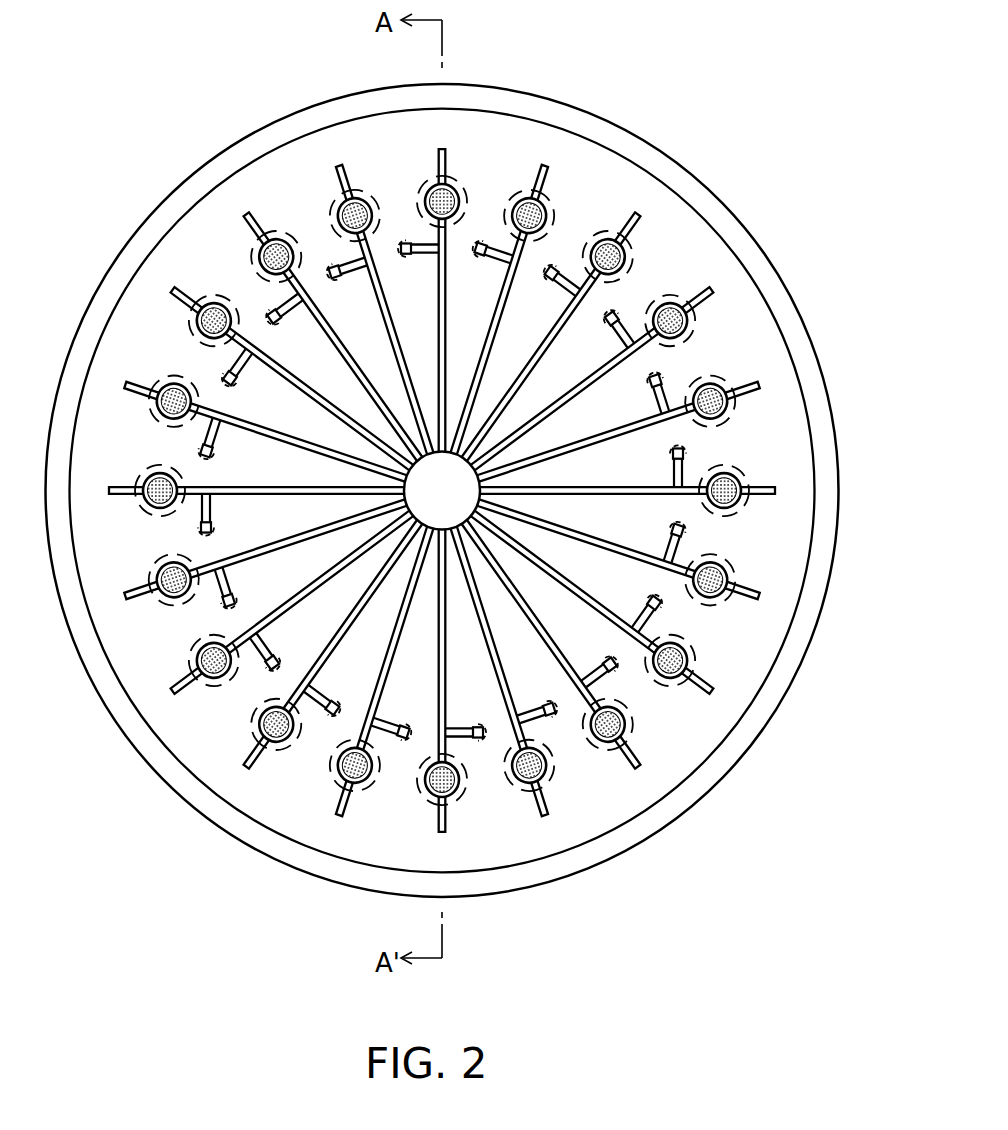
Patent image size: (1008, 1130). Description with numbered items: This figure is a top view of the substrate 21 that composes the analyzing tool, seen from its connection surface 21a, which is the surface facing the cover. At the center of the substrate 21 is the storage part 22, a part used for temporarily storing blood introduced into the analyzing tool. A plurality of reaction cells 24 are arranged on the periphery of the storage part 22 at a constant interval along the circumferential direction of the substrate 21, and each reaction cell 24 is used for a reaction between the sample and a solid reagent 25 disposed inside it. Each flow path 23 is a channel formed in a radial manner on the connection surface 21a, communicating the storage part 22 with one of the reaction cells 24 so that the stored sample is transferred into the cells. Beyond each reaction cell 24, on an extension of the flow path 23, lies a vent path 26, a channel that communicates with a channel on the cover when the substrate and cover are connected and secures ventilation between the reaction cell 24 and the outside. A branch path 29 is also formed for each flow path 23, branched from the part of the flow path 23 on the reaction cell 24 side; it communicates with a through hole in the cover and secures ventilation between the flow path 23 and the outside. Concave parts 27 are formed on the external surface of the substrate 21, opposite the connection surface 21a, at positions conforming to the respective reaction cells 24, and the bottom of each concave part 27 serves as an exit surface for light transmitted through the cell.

The substrate 21 is at (789, 269).
The connection surface 21a is at (686, 240).
The storage part 22 is at (441, 512).
The flow path 23 is at (490, 641).
The reaction cell 24 is at (521, 786).
The reagent 25 is at (515, 777).
The vent path 26 is at (528, 808).
The concave part 27 is at (556, 784).
The branch path 29 is at (547, 703).